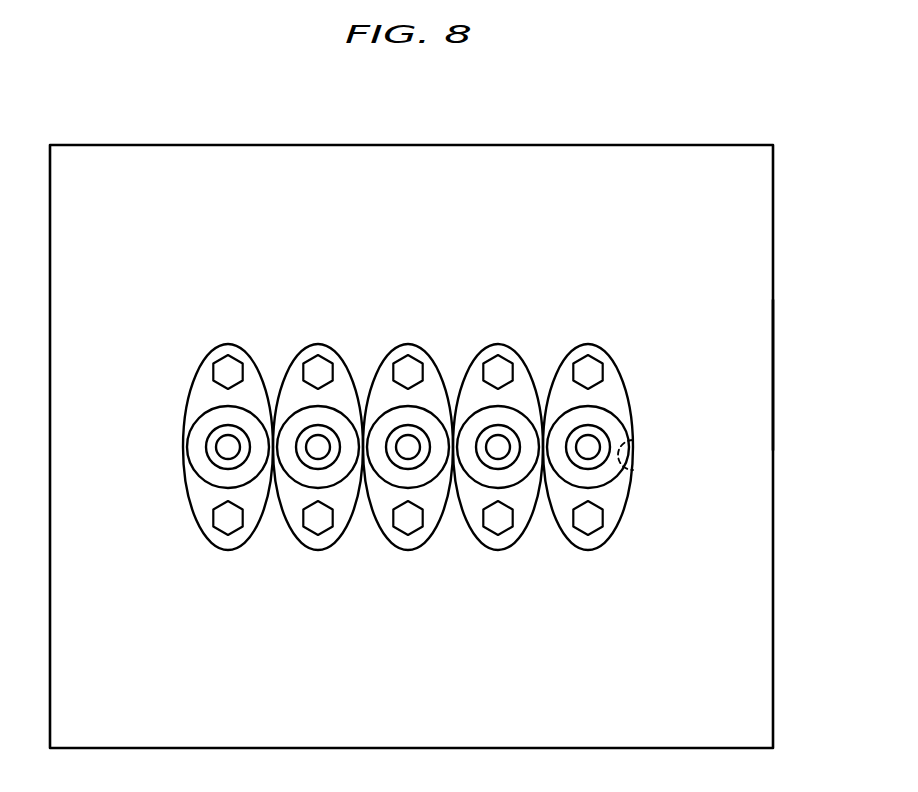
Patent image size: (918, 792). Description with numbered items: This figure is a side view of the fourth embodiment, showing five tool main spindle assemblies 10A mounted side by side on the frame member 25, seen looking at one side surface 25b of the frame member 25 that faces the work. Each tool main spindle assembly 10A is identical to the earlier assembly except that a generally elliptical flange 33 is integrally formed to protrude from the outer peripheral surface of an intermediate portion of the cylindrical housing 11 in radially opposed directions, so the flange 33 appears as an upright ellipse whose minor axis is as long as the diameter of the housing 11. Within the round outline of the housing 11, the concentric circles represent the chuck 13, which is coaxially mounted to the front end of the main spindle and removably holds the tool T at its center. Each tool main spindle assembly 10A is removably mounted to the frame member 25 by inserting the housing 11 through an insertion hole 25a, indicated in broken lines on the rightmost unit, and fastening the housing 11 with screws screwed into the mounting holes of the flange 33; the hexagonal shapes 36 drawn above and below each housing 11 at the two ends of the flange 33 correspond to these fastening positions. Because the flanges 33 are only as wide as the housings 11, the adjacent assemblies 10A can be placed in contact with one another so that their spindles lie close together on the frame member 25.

The frame member 25 is at (763, 207).
The one side surface 25b is at (757, 372).
The insertion hole 25a is at (633, 443).
The tool main spindle assembly 10A is at (411, 458).
The generally elliptical flange 33 is at (208, 357).
The hexagonal fastening hole 36 is at (234, 366).
The cylindrical housing 11 is at (202, 480).
The chuck 13 is at (206, 452).
The tool T is at (228, 445).